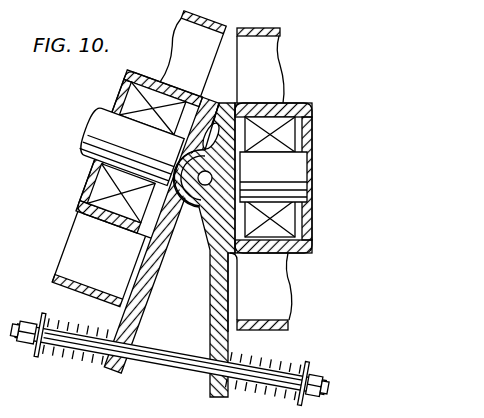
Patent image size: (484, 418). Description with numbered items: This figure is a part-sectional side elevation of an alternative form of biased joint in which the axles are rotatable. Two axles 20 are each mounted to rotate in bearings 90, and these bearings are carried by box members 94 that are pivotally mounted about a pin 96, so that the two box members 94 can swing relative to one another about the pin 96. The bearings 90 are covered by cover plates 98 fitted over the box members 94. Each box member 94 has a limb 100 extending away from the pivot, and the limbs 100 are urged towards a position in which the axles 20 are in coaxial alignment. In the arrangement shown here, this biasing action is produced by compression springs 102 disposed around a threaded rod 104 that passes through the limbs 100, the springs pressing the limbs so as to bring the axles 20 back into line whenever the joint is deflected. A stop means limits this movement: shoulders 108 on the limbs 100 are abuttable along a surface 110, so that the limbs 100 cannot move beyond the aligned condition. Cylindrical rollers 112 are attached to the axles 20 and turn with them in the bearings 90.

The axle 20 is at (115, 134).
The bearing 90 is at (163, 103).
The box member 94 is at (220, 222).
The pin 96 is at (204, 186).
The cover plate 98 is at (121, 98).
The limb 100 is at (222, 331).
The compression spring 102 is at (88, 358).
The threaded rod 104 is at (175, 363).
The shoulder 108 is at (243, 105).
The surface 110 is at (210, 110).
The cylindrical roller 112 is at (190, 23).